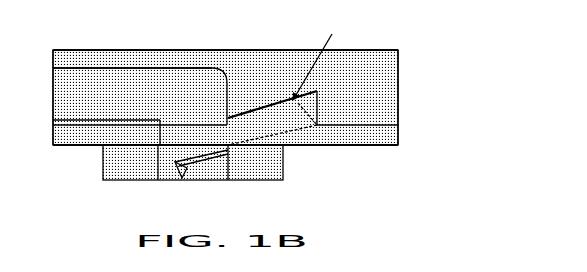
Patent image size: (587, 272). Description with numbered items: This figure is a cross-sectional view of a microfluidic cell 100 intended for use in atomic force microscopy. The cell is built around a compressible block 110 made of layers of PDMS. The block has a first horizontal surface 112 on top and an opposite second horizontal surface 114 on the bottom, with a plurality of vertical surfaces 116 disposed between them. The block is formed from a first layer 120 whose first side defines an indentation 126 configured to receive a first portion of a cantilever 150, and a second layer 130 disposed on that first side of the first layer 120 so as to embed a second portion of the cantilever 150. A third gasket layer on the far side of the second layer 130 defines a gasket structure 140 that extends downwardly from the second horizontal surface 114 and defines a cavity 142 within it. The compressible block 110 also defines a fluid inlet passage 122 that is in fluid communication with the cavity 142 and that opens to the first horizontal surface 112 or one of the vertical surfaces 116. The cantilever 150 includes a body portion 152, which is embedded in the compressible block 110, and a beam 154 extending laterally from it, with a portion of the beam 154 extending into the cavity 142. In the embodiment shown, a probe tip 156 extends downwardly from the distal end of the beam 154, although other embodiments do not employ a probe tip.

The microfluidic cell 100 is at (407, 17).
The compressible block 110 is at (205, 48).
The first horizontal surface 112 is at (133, 52).
The second horizontal surface 114 is at (343, 146).
The vertical surfaces 116 is at (53, 62).
The first layer 120 is at (399, 62).
The fluid inlet passage 122 is at (62, 100).
The indentation 126 is at (275, 98).
The second layer 130 is at (399, 138).
The gasket structure 140 is at (284, 164).
The cavity 142 is at (209, 172).
The cantilever 150 is at (325, 67).
The body portion 152 is at (262, 108).
The beam 154 is at (205, 162).
The probe tip 156 is at (181, 175).